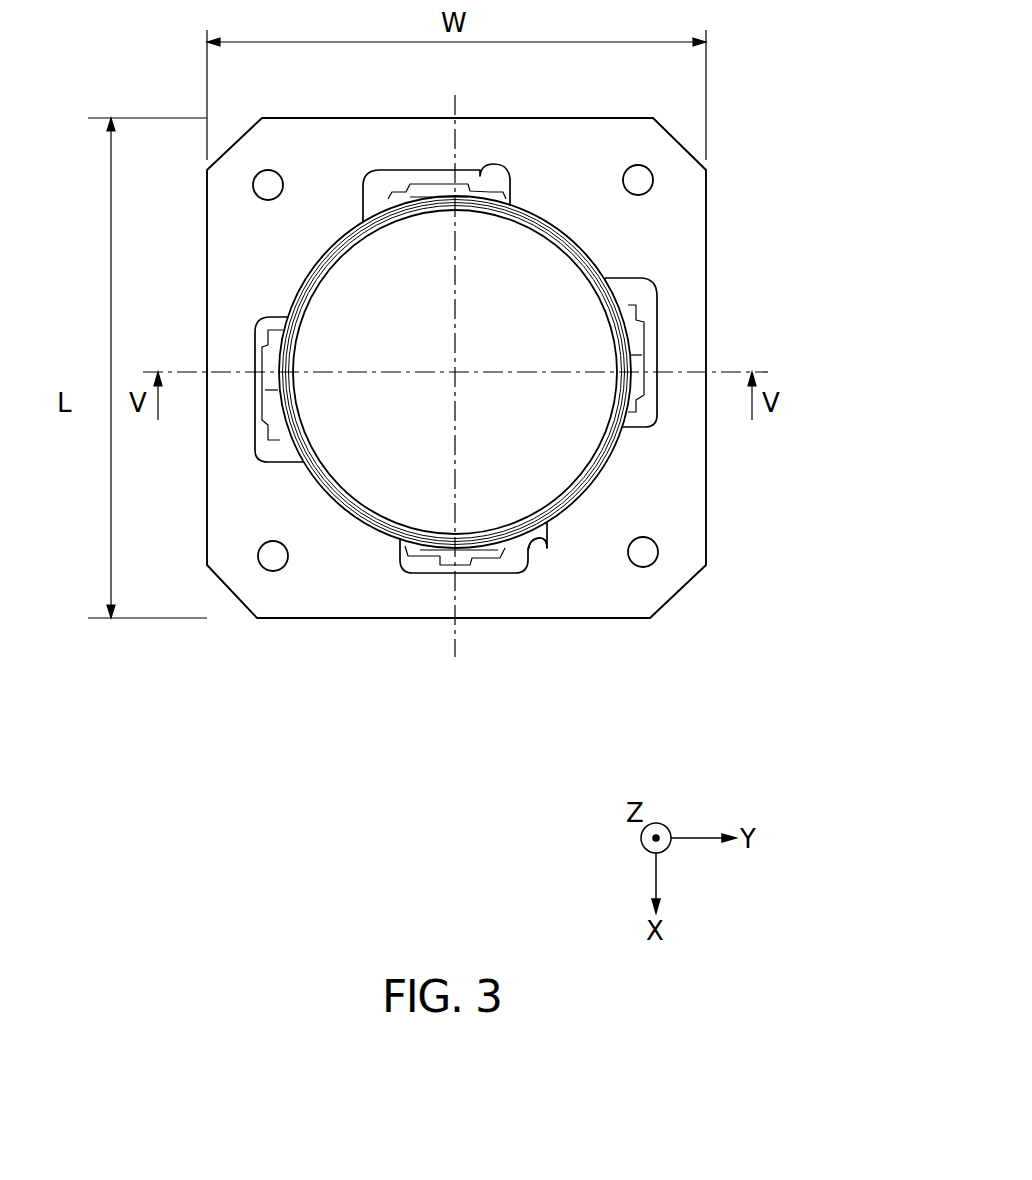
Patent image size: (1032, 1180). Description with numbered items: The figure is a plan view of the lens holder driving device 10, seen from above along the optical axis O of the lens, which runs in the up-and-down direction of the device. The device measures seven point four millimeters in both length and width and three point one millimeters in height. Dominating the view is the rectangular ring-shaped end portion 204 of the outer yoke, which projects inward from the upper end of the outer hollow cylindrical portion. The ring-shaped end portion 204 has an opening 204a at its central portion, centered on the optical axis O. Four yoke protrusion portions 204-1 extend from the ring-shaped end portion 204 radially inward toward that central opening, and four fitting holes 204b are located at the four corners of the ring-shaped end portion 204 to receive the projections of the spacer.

The lens holder driving device 10 is at (760, 144).
The ring-shaped end portion 204 is at (682, 325).
The yoke protrusion portion 204-1 is at (339, 218).
The opening 204a is at (550, 540).
The fitting hole 204b is at (268, 170).
The optical axis O is at (455, 372).